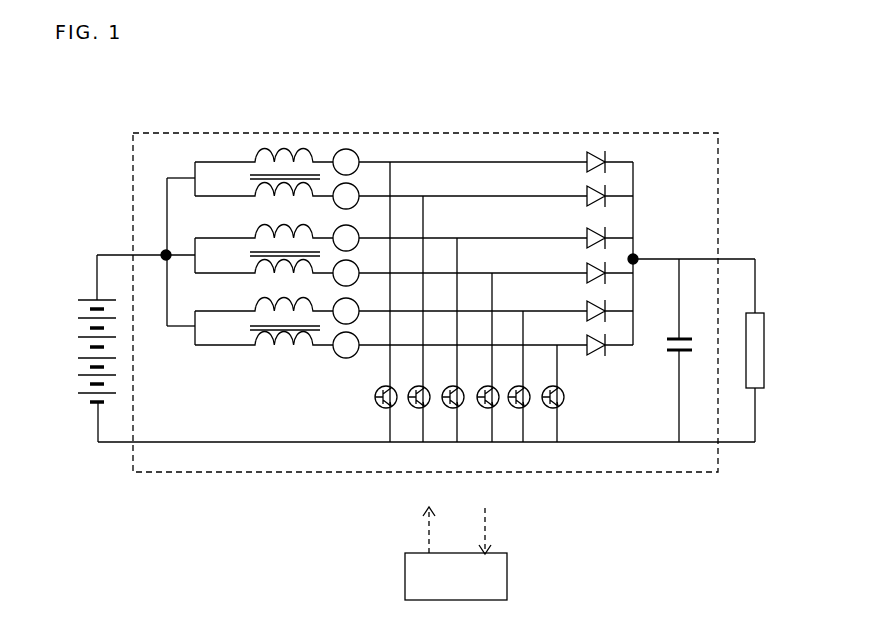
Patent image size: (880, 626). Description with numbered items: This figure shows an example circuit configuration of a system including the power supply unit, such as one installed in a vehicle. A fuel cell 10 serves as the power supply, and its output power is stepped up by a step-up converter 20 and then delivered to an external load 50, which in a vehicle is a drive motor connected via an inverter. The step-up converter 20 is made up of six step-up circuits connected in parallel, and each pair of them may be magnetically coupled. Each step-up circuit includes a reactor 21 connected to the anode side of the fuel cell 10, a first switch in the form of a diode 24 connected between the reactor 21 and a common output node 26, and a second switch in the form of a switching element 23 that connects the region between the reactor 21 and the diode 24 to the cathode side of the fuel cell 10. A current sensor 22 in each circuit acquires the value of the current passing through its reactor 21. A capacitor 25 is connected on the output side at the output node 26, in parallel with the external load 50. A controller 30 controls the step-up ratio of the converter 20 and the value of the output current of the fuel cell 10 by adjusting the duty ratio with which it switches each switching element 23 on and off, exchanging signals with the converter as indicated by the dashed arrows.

The fuel cell 10 is at (96, 403).
The step-up converter 20 is at (672, 132).
The reactor 21 is at (265, 138).
The current sensor 22 is at (342, 148).
The second switch (switching element) 23 is at (375, 397).
The first switch (diode) 24 is at (602, 165).
The capacitor 25 is at (672, 353).
The output node 26 is at (636, 256).
The controller 30 is at (485, 577).
The external load 50 is at (747, 363).